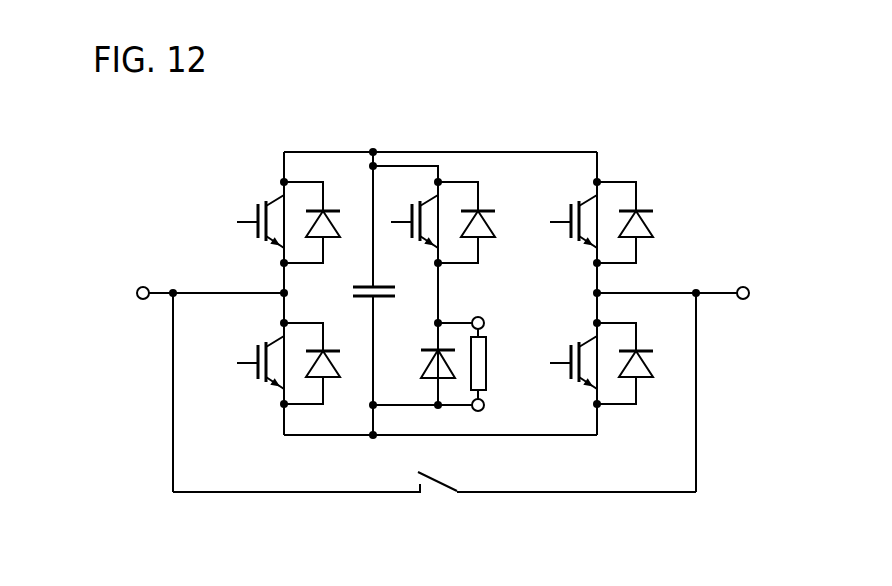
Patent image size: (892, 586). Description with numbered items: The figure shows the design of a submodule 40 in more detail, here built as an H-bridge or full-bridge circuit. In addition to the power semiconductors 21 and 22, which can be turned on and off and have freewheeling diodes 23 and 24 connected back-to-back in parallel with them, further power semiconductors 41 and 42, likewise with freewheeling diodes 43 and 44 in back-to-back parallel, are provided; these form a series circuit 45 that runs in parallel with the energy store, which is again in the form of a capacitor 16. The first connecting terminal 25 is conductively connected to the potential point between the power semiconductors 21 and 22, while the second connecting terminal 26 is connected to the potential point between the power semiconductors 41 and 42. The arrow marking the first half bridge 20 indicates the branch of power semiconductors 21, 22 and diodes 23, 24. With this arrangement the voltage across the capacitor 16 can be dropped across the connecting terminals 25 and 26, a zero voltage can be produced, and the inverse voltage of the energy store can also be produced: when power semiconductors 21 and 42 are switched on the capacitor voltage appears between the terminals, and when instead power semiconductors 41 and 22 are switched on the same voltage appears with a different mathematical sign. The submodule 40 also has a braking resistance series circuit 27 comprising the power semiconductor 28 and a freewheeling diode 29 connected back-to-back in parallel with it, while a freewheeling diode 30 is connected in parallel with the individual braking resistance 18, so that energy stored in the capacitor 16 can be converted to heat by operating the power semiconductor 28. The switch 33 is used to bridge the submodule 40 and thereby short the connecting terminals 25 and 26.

The capacitor 16 is at (352, 286).
The individual braking resistance 18 is at (488, 348).
The first half bridge 20 is at (246, 295).
The power semiconductor 21 is at (254, 205).
The power semiconductor 22 is at (254, 374).
The freewheeling diode 23 is at (333, 210).
The freewheeling diode 24 is at (325, 380).
The first connecting terminal 25 is at (143, 300).
The second connecting terminal 26 is at (743, 300).
The braking resistance series circuit 27 is at (443, 295).
The power semiconductor 28 is at (404, 204).
The freewheeling diode 29 is at (485, 208).
The freewheeling diode 30 is at (447, 380).
The switch 33 is at (435, 486).
The submodule 40 is at (628, 120).
The power semiconductor 41 is at (564, 203).
The power semiconductor 42 is at (566, 370).
The freewheeling diode 43 is at (645, 208).
The freewheeling diode 44 is at (645, 380).
The series circuit 45 is at (582, 295).